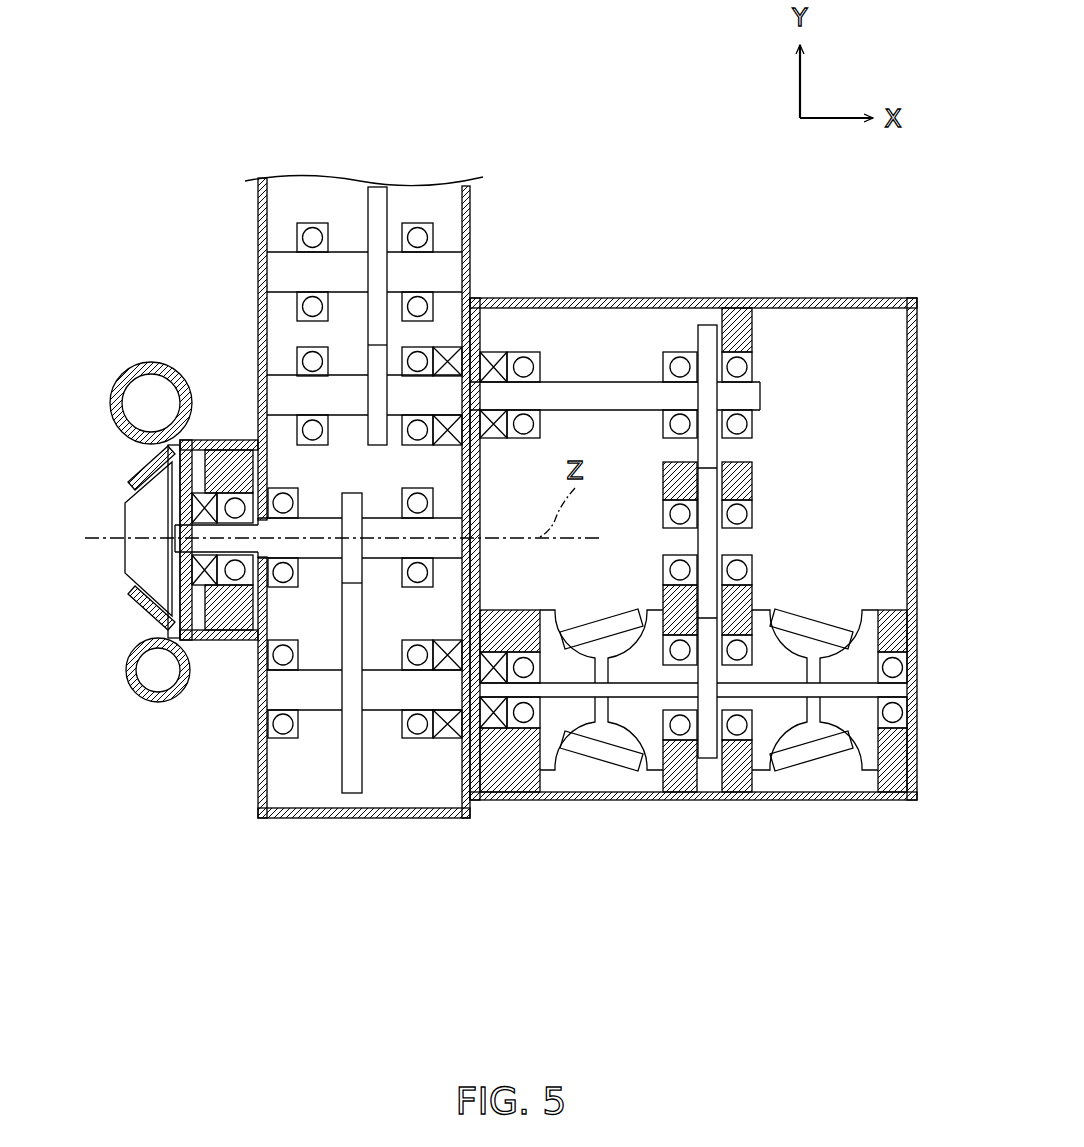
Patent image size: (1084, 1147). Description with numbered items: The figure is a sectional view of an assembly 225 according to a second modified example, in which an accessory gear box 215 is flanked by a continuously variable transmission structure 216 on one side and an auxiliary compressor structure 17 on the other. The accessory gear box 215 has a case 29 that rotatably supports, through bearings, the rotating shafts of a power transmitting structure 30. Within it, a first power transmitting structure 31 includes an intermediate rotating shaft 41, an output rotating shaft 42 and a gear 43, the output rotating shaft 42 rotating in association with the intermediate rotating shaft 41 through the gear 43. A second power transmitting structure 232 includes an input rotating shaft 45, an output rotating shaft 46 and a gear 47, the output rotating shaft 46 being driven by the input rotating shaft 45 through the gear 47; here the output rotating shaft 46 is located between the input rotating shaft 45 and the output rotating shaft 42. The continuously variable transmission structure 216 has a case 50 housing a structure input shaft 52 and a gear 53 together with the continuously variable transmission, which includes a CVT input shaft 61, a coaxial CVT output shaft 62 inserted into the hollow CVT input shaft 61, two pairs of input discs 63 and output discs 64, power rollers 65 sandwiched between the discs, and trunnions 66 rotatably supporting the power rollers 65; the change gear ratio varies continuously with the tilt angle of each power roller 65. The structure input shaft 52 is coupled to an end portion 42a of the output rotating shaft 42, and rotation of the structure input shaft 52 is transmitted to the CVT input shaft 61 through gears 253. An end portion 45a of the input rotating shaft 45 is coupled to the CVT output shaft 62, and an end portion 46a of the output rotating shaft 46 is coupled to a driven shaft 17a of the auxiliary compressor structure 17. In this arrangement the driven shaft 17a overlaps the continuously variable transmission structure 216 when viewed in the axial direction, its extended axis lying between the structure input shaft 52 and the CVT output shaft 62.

The auxiliary compressor structure 17 is at (135, 608).
The driven shaft 17a is at (232, 530).
The case 29 is at (258, 235).
The power transmitting structure 30 is at (364, 503).
The first power transmitting structure 31 is at (405, 244).
The intermediate rotating shaft 41 is at (352, 265).
The output rotating shaft 42 is at (288, 390).
The end portion 42a is at (445, 390).
The gear 43 is at (380, 317).
The input rotating shaft 45 is at (378, 697).
The end portion 45a is at (239, 772).
The output rotating shaft 46 is at (303, 543).
The end portion 46a is at (483, 723).
The gear 47 is at (352, 727).
The case 50 is at (703, 494).
The structure input shaft 52 is at (555, 395).
The gear 53 is at (767, 487).
The CVT input shaft 61 is at (678, 707).
The CVT output shaft 62 is at (709, 707).
The input discs 63 is at (652, 757).
The output discs 64 is at (553, 757).
The power rollers 65 is at (615, 637).
The trunnions 66 is at (588, 622).
The accessory gear box 215 is at (482, 220).
The continuously variable transmission structure 216 is at (892, 298).
The assembly 225 is at (703, 412).
The second power transmitting structure 232 is at (318, 725).
The gears 253 is at (707, 489).